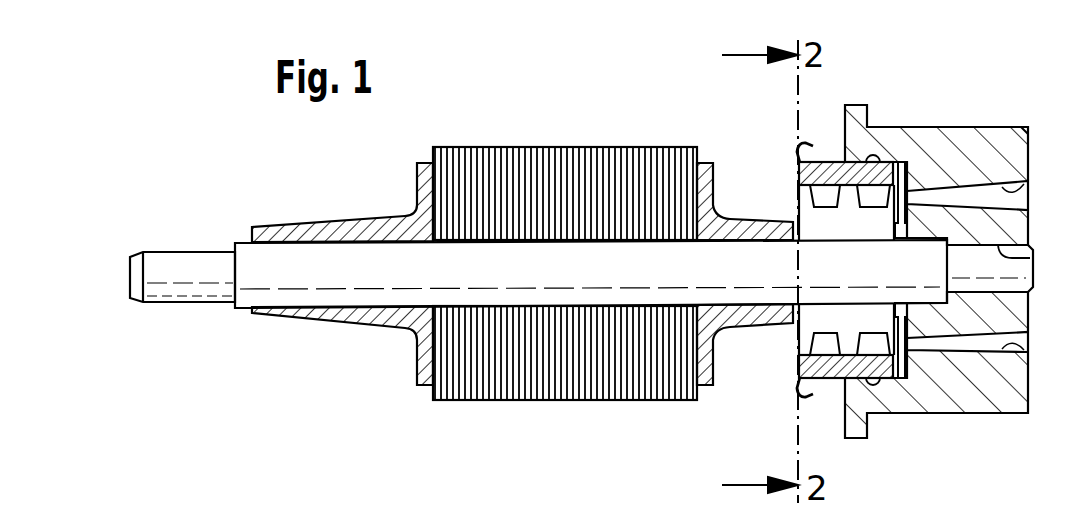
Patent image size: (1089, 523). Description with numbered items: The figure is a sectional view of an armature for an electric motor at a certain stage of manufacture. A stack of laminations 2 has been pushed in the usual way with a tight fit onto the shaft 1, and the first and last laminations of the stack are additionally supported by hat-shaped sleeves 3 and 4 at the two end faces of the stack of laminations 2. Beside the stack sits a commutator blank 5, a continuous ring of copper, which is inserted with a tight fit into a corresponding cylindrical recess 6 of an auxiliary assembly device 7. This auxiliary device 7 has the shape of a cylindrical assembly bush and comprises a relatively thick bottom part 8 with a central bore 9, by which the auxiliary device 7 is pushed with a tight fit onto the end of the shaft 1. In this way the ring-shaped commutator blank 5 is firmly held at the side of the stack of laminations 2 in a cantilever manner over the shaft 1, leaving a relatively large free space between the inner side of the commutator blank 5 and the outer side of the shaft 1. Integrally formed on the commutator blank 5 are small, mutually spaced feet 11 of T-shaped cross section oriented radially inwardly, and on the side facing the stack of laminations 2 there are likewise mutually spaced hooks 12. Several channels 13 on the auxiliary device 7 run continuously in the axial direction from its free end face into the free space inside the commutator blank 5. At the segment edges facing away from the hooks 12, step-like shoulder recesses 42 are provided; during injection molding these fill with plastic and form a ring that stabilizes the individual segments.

The shaft 1 is at (195, 267).
The stack of laminations 2 is at (553, 168).
The hat-shaped sleeve 3 is at (352, 322).
The hat-shaped sleeve 4 is at (742, 322).
The commutator blank 5 is at (833, 156).
The cylindrical recess 6 is at (872, 166).
The auxiliary assembly device 7 is at (980, 122).
The bottom part 8 is at (977, 397).
The central bore 9 is at (1036, 254).
The feet 11 is at (816, 194).
The hooks 12 is at (812, 145).
The channels 13 is at (1030, 189).
The shoulder-like recesses 42 is at (892, 163).